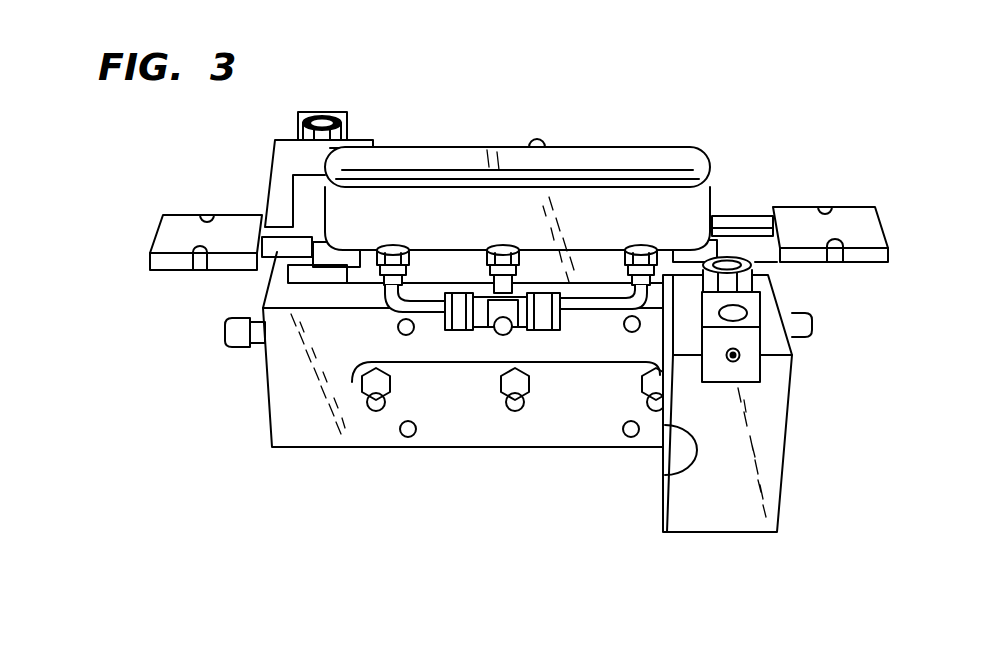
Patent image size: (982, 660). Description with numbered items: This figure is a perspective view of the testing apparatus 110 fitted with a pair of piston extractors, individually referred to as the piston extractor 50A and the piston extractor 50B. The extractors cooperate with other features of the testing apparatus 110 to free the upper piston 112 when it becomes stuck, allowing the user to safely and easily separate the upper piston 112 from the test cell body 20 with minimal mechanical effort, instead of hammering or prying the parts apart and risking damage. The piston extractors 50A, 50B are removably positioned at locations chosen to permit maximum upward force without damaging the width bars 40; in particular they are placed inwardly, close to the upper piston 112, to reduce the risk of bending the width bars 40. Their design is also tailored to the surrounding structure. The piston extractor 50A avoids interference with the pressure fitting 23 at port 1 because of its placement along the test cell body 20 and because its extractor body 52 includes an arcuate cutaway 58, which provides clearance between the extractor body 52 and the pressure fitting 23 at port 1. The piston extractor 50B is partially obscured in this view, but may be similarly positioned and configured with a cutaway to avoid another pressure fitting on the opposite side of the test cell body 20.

The testing apparatus 110 is at (150, 292).
The width bars 40 is at (235, 223).
The piston extractor 50B is at (332, 102).
The upper piston 112 is at (590, 153).
The test cell body 20 is at (467, 410).
The pressure fitting 23 is at (512, 345).
The port 1 is at (635, 384).
The extractor body 52 is at (703, 502).
The arcuate cutaway 58 is at (677, 452).
The piston extractor 50A is at (742, 540).